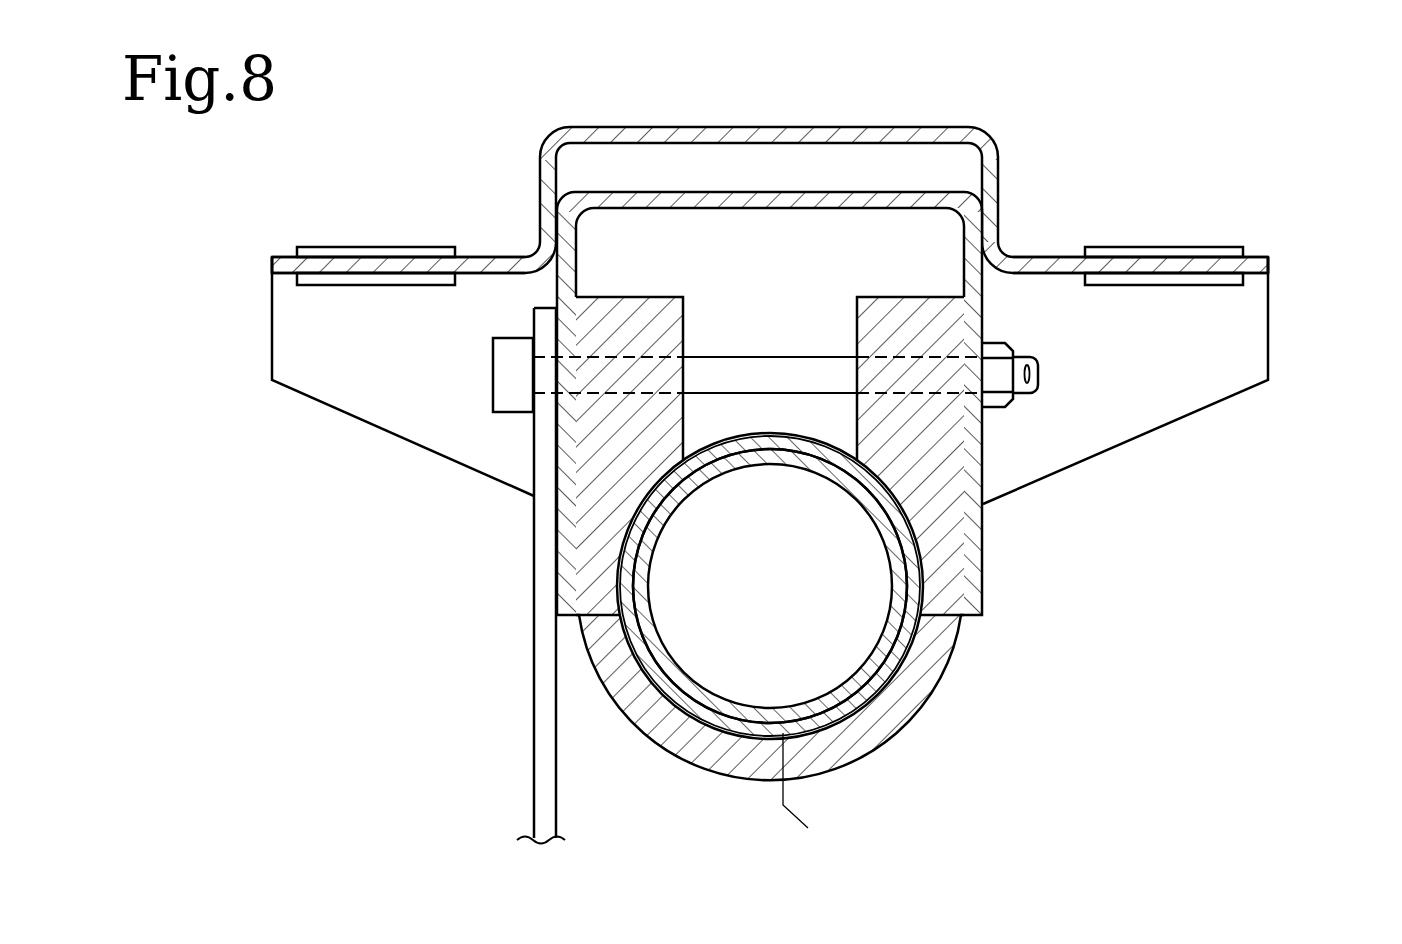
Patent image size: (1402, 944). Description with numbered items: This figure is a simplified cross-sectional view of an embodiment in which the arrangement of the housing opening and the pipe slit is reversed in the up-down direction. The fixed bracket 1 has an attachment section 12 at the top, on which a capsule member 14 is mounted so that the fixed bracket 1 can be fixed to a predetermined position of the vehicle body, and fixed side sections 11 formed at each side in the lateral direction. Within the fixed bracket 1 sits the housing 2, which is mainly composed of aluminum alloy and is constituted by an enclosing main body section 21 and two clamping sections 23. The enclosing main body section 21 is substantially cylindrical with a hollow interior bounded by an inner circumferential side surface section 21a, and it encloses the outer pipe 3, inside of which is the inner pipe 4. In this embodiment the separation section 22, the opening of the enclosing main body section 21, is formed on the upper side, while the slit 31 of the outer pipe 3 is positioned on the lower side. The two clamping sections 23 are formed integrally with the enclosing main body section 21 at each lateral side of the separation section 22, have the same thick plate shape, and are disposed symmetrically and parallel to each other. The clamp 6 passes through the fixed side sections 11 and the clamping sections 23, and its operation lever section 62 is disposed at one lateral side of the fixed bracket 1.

The fixed bracket 1 is at (1022, 203).
The housing 2 is at (790, 507).
The outer pipe 3 is at (779, 432).
The inner pipe 4 is at (872, 531).
The clamp 6 is at (1044, 370).
The fixed side section 11 is at (556, 281).
The attachment section 12 is at (951, 127).
The capsule member 14 is at (402, 247).
The enclosing main body section 21 is at (769, 507).
The inner circumferential side surface section 21a is at (667, 698).
The separation section 22 is at (714, 336).
The clamping section 23 is at (636, 314).
The slit 31 is at (815, 791).
The operation lever section 62 is at (533, 733).